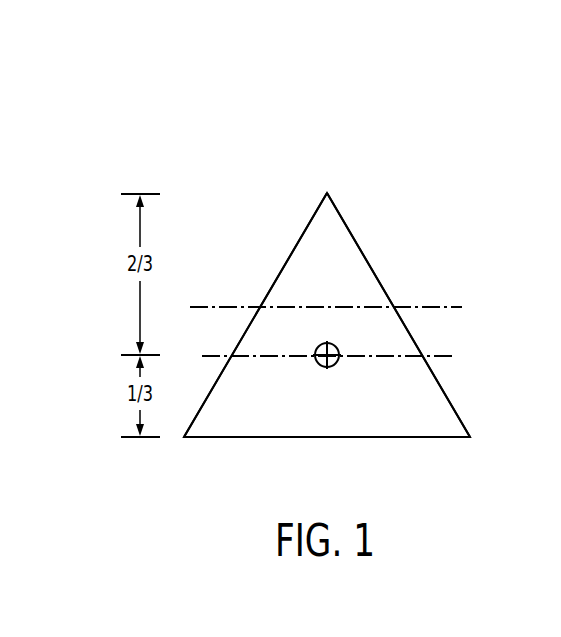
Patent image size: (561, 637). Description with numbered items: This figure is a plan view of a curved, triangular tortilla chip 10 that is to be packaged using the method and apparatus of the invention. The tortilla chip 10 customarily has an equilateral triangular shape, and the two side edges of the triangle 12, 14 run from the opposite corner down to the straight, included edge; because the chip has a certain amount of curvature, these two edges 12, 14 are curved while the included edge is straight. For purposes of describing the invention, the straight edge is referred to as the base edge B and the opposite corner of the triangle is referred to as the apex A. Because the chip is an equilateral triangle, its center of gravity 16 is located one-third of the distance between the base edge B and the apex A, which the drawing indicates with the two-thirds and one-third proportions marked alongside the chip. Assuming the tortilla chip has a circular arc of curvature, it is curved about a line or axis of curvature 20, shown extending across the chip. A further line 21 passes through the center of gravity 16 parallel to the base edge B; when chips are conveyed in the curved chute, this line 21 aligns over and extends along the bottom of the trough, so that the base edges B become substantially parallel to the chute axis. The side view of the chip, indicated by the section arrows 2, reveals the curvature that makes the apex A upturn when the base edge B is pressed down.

The tortilla chip 10 is at (410, 206).
The edge of the triangle 12 is at (295, 247).
The edge of the triangle 14 is at (360, 247).
The center of gravity 16 is at (320, 367).
The axis of curvature 20 is at (425, 307).
The line 21 is at (430, 356).
The side view section line 2 is at (532, 195).
The apex A is at (338, 201).
The base edge B is at (282, 438).